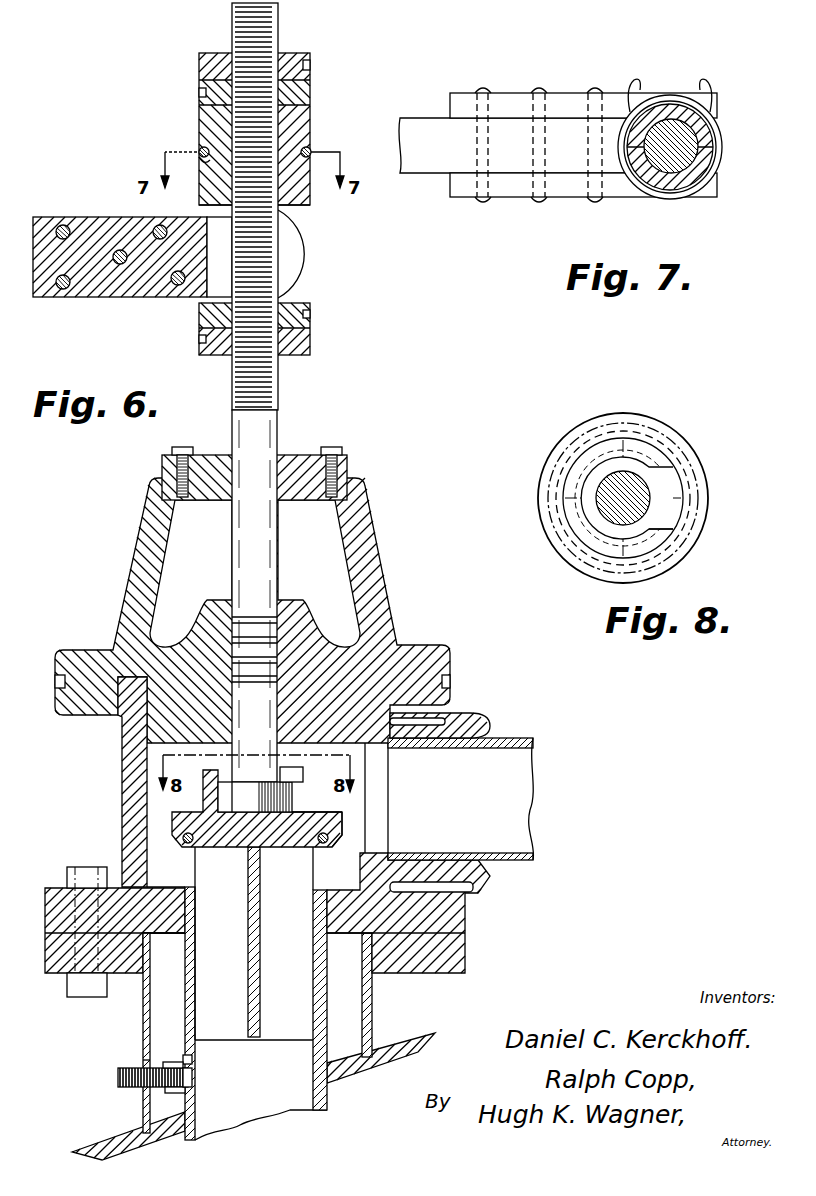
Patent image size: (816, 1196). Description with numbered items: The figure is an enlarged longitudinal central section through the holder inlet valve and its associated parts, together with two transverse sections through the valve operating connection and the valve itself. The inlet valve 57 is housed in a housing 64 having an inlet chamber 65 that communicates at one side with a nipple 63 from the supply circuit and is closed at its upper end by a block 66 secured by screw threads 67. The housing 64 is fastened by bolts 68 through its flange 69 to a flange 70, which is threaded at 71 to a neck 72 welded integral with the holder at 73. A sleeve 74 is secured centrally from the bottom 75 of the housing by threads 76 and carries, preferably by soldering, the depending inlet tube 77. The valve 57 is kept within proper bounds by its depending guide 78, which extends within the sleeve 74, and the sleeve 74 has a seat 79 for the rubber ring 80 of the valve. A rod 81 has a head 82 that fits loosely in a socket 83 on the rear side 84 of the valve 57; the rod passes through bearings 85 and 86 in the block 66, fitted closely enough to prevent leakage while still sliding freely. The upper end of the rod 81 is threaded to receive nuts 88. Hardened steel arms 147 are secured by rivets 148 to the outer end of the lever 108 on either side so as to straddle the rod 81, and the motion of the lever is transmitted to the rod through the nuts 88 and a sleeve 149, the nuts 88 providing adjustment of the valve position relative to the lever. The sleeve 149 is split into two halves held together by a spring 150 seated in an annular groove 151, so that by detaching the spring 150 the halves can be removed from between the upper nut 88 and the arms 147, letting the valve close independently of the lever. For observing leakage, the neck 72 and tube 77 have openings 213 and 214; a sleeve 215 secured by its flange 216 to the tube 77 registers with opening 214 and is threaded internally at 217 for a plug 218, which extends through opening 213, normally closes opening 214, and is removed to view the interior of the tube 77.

In FIG. 6, the inlet valve 57 is at (303, 813).
In FIG. 8, the inlet valve 57 is at (680, 537).
In FIG. 6, the nipple 63 is at (500, 738).
In FIG. 6, the housing 64 is at (122, 815).
In FIG. 6, the inlet chamber 65 is at (256, 808).
In FIG. 6, the block 66 is at (408, 655).
In FIG. 6, the screw threads 67 is at (445, 716).
In FIG. 6, the bolts 68 is at (84, 872).
In FIG. 6, the flange 69 is at (50, 890).
In FIG. 6, the flange 70 is at (47, 977).
In FIG. 6, the threads 71 is at (141, 965).
In FIG. 6, the neck 72 is at (143, 1029).
In FIG. 6, the weld 73 is at (145, 1122).
In FIG. 6, the sleeve 74 is at (167, 950).
In FIG. 6, the bottom 75 is at (166, 873).
In FIG. 6, the threads 76 is at (196, 916).
In FIG. 6, the inlet tube 77 is at (196, 1000).
In FIG. 6, the guide 78 is at (271, 936).
In FIG. 6, the seat 79 is at (198, 878).
In FIG. 6, the rubber ring 80 is at (327, 843).
In FIG. 8, the rubber ring 80 is at (693, 560).
In FIG. 6, the rod 81 is at (254, 556).
In FIG. 7, the rod 81 is at (695, 160).
In FIG. 8, the rod 81 is at (640, 486).
In FIG. 6, the head 82 is at (255, 797).
In FIG. 8, the head 82 is at (655, 510).
In FIG. 6, the socket 83 is at (302, 780).
In FIG. 8, the socket 83 is at (680, 516).
In FIG. 6, the rear side 84 is at (346, 802).
In FIG. 6, the bearing 85 is at (279, 632).
In FIG. 6, the bearing 86 is at (233, 468).
In FIG. 6, the nuts 88 is at (311, 62).
In FIG. 6, the lever 108 is at (90, 293).
In FIG. 7, the lever 108 is at (513, 145).
In FIG. 6, the hardened steel arms 147 is at (301, 262).
In FIG. 7, the hardened steel arms 147 is at (456, 105).
In FIG. 6, the rivets 148 is at (155, 230).
In FIG. 7, the rivets 148 is at (596, 91).
In FIG. 6, the sleeve 149 is at (311, 201).
In FIG. 7, the sleeve 149 is at (716, 190).
In FIG. 6, the spring 150 is at (200, 150).
In FIG. 7, the spring 150 is at (722, 140).
In FIG. 6, the annular groove 151 is at (203, 160).
In FIG. 7, the annular groove 151 is at (676, 98).
In FIG. 6, the opening 213 is at (143, 1061).
In FIG. 6, the opening 214 is at (192, 1083).
In FIG. 6, the sleeve 215 is at (166, 1062).
In FIG. 6, the flange 216 is at (192, 1058).
In FIG. 6, the threads 217 is at (165, 1090).
In FIG. 6, the plug 218 is at (119, 1080).